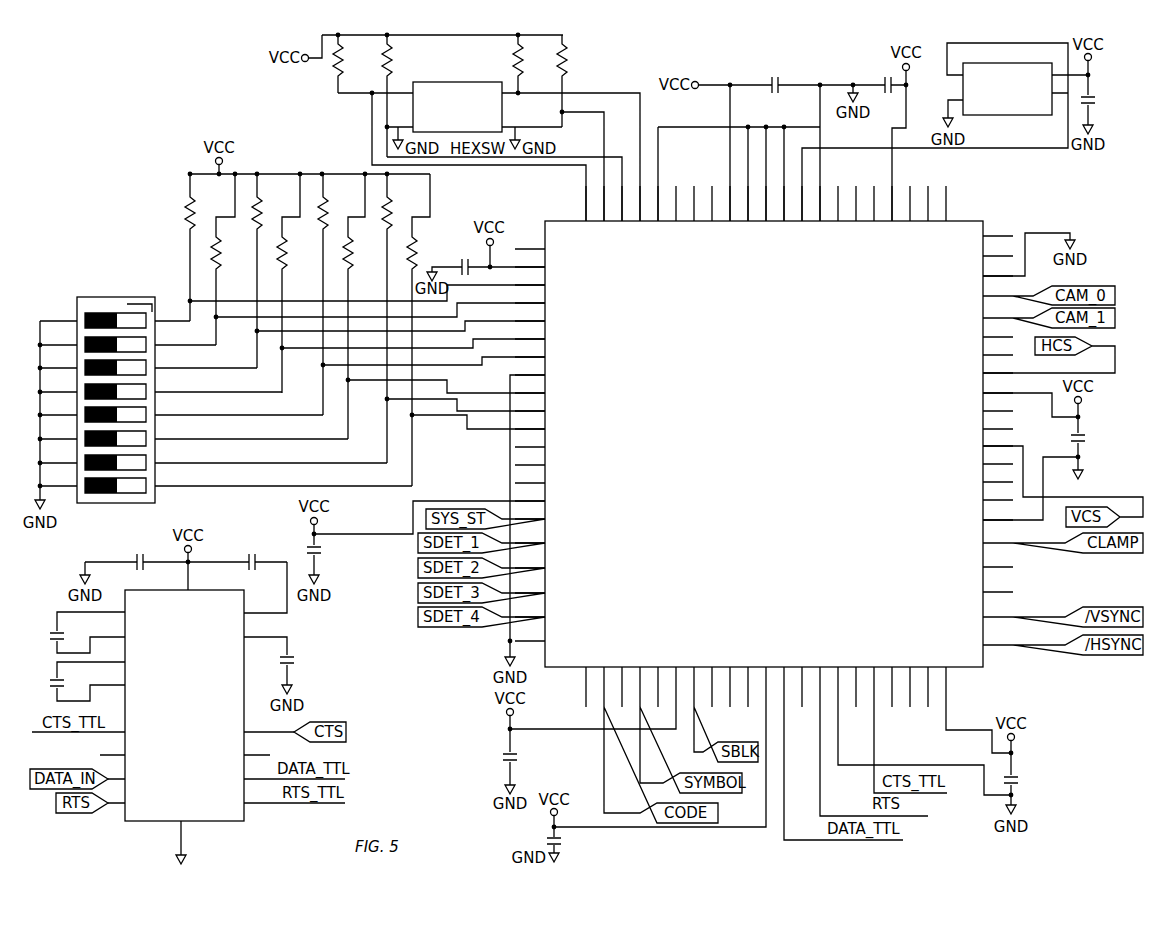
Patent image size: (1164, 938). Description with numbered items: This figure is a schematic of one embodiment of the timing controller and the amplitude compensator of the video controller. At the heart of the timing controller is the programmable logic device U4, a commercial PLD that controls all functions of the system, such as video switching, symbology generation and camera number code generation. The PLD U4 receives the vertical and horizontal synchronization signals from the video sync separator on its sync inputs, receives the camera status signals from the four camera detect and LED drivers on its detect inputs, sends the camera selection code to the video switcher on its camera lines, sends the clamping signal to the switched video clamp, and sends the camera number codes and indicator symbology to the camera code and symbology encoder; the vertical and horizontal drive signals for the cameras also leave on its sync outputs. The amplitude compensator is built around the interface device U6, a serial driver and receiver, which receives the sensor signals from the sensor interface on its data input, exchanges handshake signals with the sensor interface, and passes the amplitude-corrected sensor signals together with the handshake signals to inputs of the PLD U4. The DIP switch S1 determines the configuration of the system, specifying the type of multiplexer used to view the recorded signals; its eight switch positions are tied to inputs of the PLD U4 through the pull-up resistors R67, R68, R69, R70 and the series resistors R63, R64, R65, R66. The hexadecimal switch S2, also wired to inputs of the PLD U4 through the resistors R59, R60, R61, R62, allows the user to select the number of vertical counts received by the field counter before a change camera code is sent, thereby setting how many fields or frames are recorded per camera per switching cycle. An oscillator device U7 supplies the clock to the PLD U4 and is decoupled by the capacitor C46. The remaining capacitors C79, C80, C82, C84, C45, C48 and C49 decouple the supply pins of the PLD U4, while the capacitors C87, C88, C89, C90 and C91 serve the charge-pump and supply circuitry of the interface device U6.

The programmable logic device U4 is at (764, 446).
The interface device U6 is at (188, 708).
The clock oscillator U7 is at (945, 132).
The DIP switch S1 is at (226, 404).
The hexadecimal switch S2 is at (458, 95).
The resistor R59 is at (354, 64).
The resistor R60 is at (403, 96).
The resistor R61 is at (534, 64).
The resistor R62 is at (578, 81).
The resistor R63 is at (232, 259).
The resistor R64 is at (298, 283).
The resistor R65 is at (364, 306).
The resistor R66 is at (427, 330).
The resistor R67 is at (206, 247).
The resistor R68 is at (273, 271).
The resistor R69 is at (339, 294).
The resistor R70 is at (403, 318).
The capacitor C45 is at (329, 554).
The capacitor C46 is at (1102, 100).
The capacitor C48 is at (1093, 443).
The capacitor C49 is at (797, 803).
The capacitor C79 is at (878, 76).
The capacitor C80 is at (775, 76).
The capacitor C82 is at (464, 256).
The capacitor C84 is at (525, 757).
The capacitor C87 is at (139, 552).
The capacitor C88 is at (253, 552).
The capacitor C89 is at (73, 627).
The capacitor C90 is at (73, 675).
The capacitor C91 is at (303, 659).